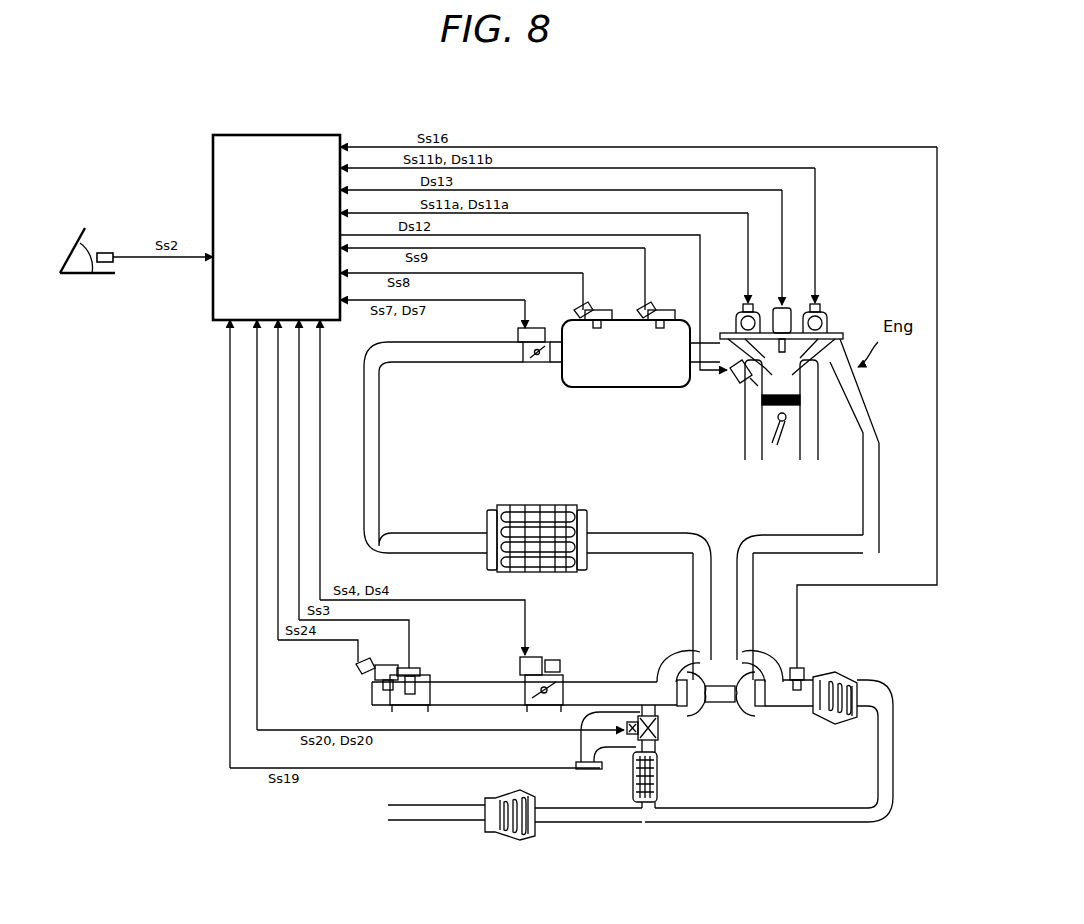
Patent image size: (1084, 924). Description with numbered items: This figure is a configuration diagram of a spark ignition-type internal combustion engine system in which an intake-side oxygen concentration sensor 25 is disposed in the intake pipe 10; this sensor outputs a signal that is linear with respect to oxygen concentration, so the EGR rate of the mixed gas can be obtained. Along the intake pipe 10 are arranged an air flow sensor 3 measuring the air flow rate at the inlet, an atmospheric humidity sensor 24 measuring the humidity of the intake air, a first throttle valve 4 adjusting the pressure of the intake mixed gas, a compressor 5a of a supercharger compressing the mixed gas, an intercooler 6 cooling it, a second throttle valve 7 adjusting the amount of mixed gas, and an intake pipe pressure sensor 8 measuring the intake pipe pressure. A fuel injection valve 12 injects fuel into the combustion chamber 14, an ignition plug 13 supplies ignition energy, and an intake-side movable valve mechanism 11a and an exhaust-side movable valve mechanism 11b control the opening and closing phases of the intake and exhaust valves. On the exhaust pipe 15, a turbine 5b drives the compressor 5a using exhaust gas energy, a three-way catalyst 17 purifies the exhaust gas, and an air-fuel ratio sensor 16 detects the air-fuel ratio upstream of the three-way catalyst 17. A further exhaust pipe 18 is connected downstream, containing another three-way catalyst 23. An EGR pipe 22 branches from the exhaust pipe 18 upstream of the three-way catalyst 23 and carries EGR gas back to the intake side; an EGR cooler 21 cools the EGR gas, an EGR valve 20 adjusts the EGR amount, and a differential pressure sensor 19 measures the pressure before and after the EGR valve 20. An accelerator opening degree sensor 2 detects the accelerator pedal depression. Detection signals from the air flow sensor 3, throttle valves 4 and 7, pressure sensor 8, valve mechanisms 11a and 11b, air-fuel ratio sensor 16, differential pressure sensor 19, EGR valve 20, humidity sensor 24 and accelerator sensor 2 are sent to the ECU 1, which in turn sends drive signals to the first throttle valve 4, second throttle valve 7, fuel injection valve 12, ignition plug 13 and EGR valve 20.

The control unit (ECU) 1 is at (213, 296).
The accelerator opening degree sensor 2 is at (107, 253).
The air flow sensor 3 is at (412, 668).
The first throttle valve 4 is at (522, 660).
The compressor 5a is at (686, 662).
The turbine 5b is at (760, 712).
The intercooler 6 is at (598, 568).
The second throttle valve 7 is at (522, 358).
The intake pipe pressure sensor 8 is at (594, 304).
The intake pipe 10 is at (614, 380).
The intake-side movable valve mechanism 11a is at (740, 304).
The exhaust-side movable valve mechanism 11b is at (826, 304).
The fuel injection valve 12 is at (737, 380).
The ignition plug 13 is at (785, 304).
The combustion chamber 14 is at (768, 388).
The exhaust pipe 15 is at (875, 430).
The air-fuel ratio sensor 16 is at (800, 668).
The three-way catalyst 17 is at (845, 675).
The exhaust pipe 18 is at (893, 705).
The differential pressure sensor 19 is at (585, 770).
The EGR valve 20 is at (660, 728).
The EGR cooler 21 is at (660, 780).
The EGR pipe 22 is at (652, 742).
The three-way catalyst 23 is at (503, 832).
The atmospheric humidity sensor 24 is at (375, 682).
The intake-side oxygen concentration sensor 25 is at (650, 304).